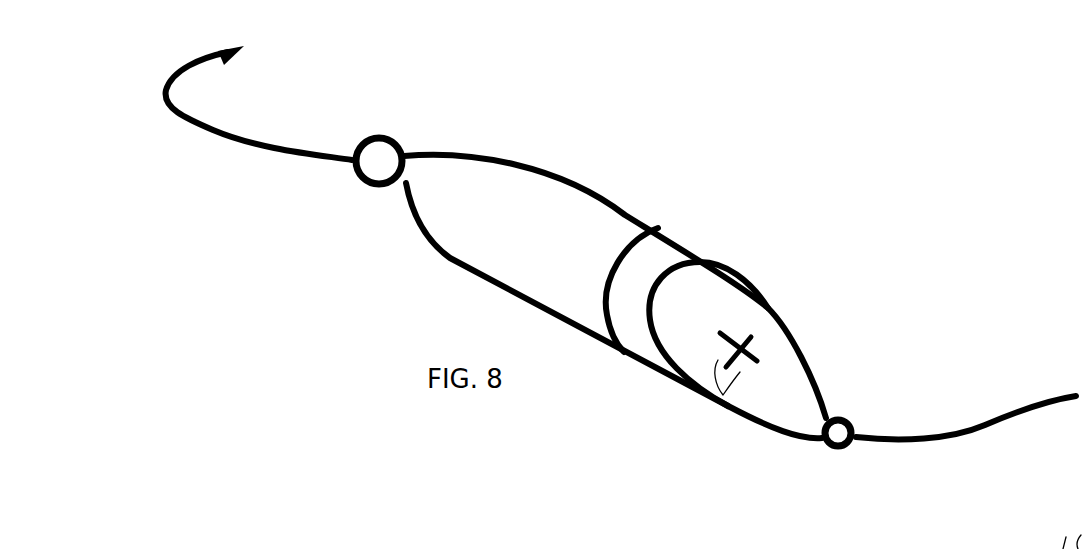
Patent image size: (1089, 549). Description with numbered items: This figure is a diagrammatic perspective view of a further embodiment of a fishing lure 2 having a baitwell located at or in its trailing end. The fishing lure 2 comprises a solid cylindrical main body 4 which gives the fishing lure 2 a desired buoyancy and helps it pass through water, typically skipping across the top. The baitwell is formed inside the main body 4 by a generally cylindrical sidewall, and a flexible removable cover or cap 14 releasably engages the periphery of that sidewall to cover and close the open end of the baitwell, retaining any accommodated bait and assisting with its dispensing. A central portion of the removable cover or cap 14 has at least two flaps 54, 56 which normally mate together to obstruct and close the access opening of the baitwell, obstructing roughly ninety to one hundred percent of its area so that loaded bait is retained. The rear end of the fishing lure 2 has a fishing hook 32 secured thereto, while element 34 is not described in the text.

The fishing lure 2 is at (758, 193).
The main body 4 is at (587, 190).
The removable cover or cap 14 is at (763, 300).
The fishing hook 32 is at (178, 119).
The second end strand 34 is at (1013, 410).
The flap 54 is at (723, 395).
The flap 56 is at (760, 343).